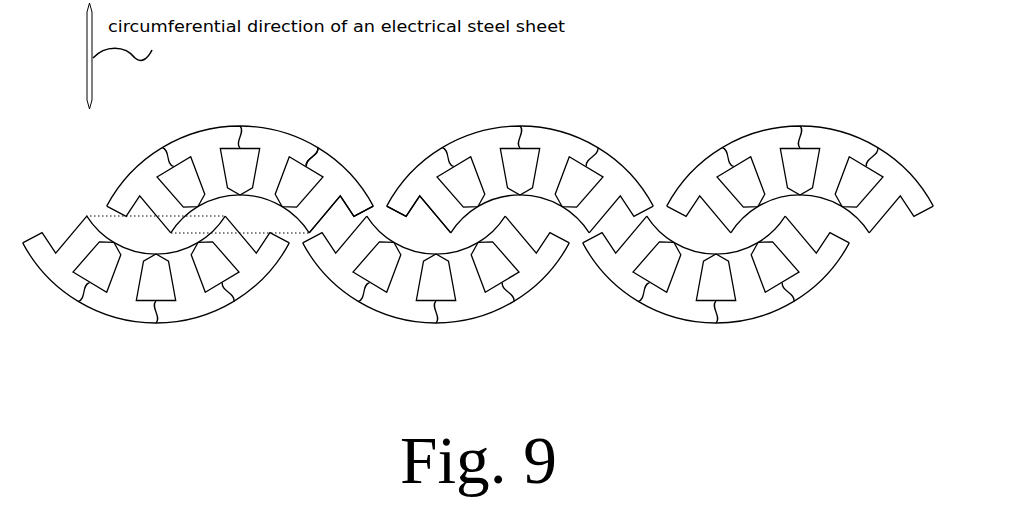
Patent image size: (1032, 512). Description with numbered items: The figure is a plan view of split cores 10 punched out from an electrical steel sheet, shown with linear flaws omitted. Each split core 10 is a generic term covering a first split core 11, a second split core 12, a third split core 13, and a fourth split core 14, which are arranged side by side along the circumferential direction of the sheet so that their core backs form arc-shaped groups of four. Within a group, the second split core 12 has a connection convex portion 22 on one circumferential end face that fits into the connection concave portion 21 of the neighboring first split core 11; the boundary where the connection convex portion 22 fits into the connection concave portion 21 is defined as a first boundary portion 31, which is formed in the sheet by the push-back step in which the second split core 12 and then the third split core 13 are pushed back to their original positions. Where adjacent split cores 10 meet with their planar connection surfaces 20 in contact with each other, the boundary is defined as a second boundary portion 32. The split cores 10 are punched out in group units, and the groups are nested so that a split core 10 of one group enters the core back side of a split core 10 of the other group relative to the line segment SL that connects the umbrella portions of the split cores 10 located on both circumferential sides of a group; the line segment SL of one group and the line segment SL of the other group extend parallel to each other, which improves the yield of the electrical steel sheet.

The split core 10 is at (478, 209).
The first split core 11 is at (257, 364).
The second split core 12 is at (188, 364).
The third split core 13 is at (266, 209).
The fourth split core 14 is at (60, 364).
The connection surface 20 is at (401, 156).
The connection concave portion 21 is at (382, 99).
The connection convex portion 22 is at (311, 155).
The first boundary portion 31 is at (382, 99).
The second boundary portion 32 is at (377, 209).
The line segment SL is at (102, 215).